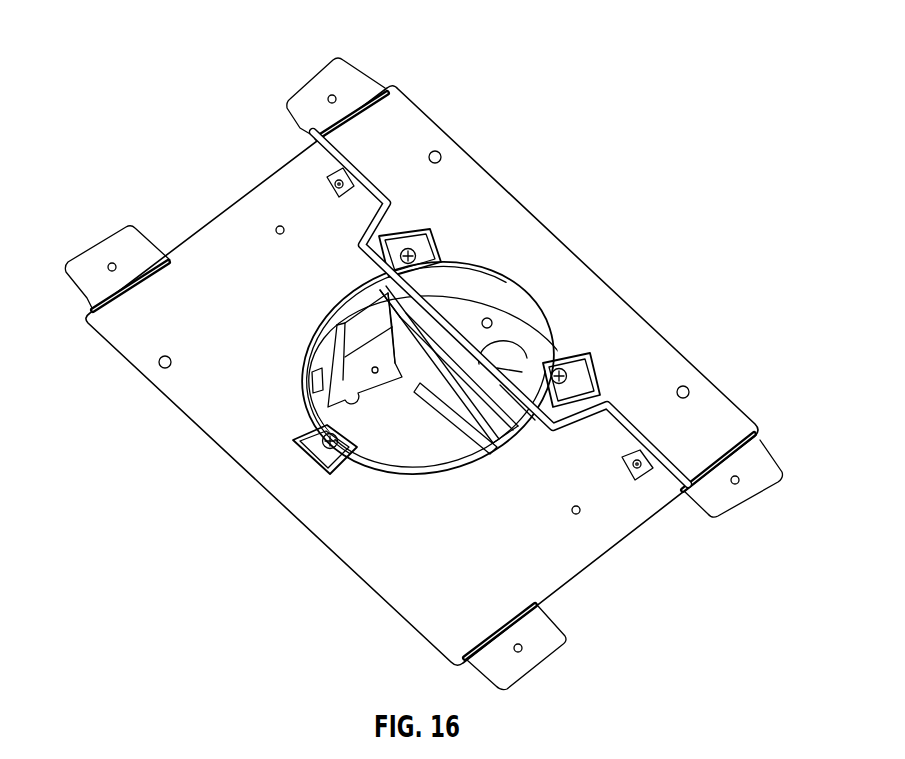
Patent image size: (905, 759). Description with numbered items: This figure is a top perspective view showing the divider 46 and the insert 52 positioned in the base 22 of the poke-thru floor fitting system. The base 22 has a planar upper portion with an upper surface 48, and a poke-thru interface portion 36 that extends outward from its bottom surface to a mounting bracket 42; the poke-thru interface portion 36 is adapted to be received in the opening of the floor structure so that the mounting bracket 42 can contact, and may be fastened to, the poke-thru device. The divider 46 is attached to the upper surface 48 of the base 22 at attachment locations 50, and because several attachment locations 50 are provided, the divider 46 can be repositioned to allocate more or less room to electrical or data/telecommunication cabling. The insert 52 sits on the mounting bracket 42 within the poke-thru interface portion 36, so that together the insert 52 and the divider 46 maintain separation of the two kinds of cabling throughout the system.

The base 22 is at (652, 518).
The poke-thru interface portion 36 is at (430, 290).
The mounting bracket 42 is at (345, 373).
The divider 46 is at (354, 162).
The upper surface 48 is at (552, 578).
The attachment locations 50 is at (338, 184).
The insert 52 is at (534, 356).